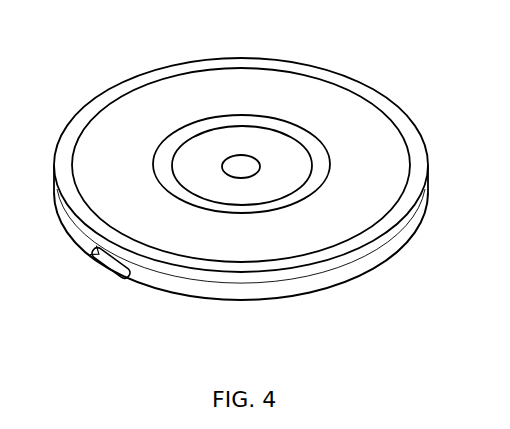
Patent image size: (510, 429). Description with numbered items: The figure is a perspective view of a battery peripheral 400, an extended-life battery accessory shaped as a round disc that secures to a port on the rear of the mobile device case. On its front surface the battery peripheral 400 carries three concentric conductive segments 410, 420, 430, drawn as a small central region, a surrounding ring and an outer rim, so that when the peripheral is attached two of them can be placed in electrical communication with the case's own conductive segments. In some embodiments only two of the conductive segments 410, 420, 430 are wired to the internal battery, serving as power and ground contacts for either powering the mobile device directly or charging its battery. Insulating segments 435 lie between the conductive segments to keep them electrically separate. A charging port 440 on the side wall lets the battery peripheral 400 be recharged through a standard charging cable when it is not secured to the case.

The battery peripheral 400 is at (428, 68).
The conductive segment 410 is at (258, 178).
The conductive segment 420 is at (272, 214).
The conductive segment 430 is at (262, 276).
The insulating segment 435 is at (220, 194).
The charging port 440 is at (96, 275).